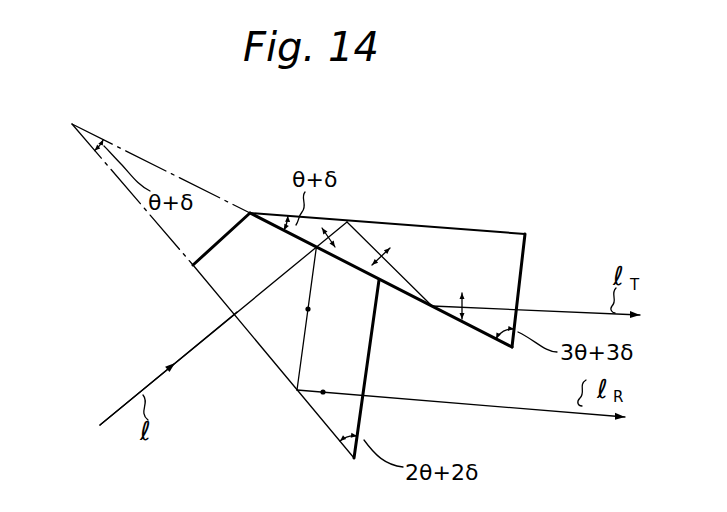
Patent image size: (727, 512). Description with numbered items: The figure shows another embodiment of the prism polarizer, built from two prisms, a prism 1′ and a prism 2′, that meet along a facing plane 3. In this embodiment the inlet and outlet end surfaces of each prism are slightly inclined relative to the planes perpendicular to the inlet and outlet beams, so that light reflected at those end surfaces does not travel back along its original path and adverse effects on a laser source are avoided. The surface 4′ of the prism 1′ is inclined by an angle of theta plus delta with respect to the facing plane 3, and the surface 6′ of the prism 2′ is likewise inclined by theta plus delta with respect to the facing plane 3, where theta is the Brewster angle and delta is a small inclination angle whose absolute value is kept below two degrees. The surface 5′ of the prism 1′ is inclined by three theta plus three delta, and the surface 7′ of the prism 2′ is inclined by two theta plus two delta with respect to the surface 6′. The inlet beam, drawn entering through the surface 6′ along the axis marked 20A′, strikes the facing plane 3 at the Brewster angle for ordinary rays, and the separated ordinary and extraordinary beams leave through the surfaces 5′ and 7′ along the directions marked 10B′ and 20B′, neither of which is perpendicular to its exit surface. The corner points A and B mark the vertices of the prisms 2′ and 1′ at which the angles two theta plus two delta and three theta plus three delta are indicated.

The prism 1′ is at (408, 254).
The prism 2′ is at (244, 291).
The facing plane 3 is at (328, 254).
The surface of prism 1′ 4′ is at (470, 231).
The outlet end surface of prism 1′ 5′ is at (524, 263).
The inlet end surface of prism 2′ 6′ is at (213, 289).
The outlet end surface of prism 2′ 7′ is at (381, 338).
The transmitted output beam axis 10B′ is at (536, 303).
The input optical axis 20A′ is at (187, 383).
The reflected output beam axis 20B′ is at (461, 417).
The apex point A is at (355, 458).
The apex point B is at (514, 354).